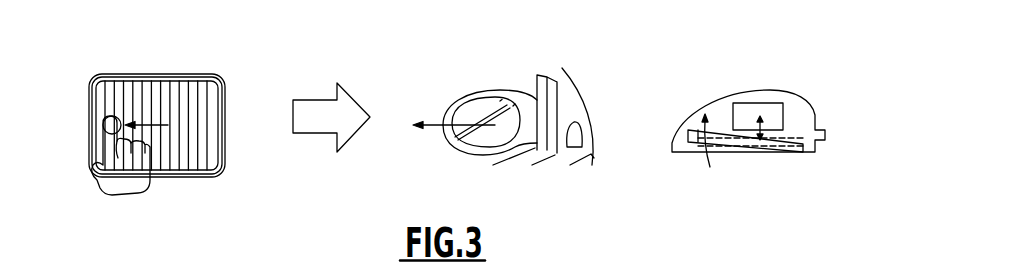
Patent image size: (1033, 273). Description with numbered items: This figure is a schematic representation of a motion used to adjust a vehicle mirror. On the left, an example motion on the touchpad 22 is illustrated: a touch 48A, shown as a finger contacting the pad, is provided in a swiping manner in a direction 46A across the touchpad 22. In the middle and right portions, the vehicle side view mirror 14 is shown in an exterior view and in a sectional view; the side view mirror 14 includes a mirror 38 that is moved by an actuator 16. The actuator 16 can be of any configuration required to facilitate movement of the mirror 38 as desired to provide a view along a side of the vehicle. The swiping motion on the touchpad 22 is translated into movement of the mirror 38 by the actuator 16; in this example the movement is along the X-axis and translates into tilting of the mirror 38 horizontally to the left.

The touchpad 22 is at (233, 71).
The direction 46A is at (153, 125).
The touch 48A is at (110, 175).
The vehicle side view mirror 14 is at (483, 77).
The mirror 38 is at (487, 136).
The actuator 16 is at (750, 113).